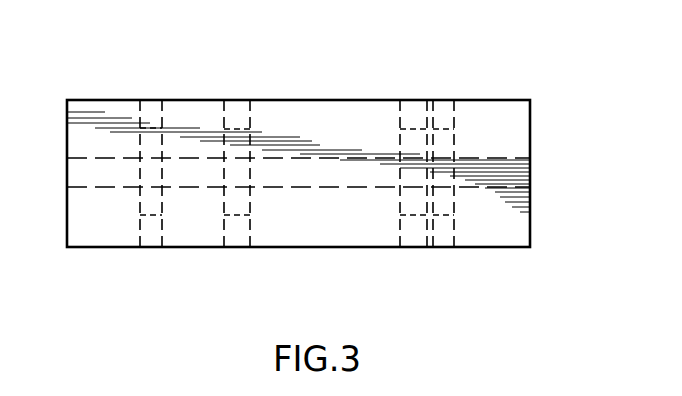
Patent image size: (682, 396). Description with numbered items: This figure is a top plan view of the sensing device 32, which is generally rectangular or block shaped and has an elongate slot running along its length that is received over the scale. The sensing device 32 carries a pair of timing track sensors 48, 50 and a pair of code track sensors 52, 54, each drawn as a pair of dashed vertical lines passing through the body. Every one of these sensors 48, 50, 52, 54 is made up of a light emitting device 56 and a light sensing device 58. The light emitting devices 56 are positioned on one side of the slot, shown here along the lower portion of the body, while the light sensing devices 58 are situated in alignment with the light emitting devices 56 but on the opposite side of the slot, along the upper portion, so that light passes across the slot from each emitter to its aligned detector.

The sensing device 32 is at (330, 100).
The timing track sensor 48 is at (240, 247).
The timing track sensor 50 is at (445, 247).
The code track sensor 52 is at (151, 247).
The code track sensor 54 is at (415, 247).
The light emitting device 56 is at (140, 205).
The light sensing device 58 is at (140, 143).